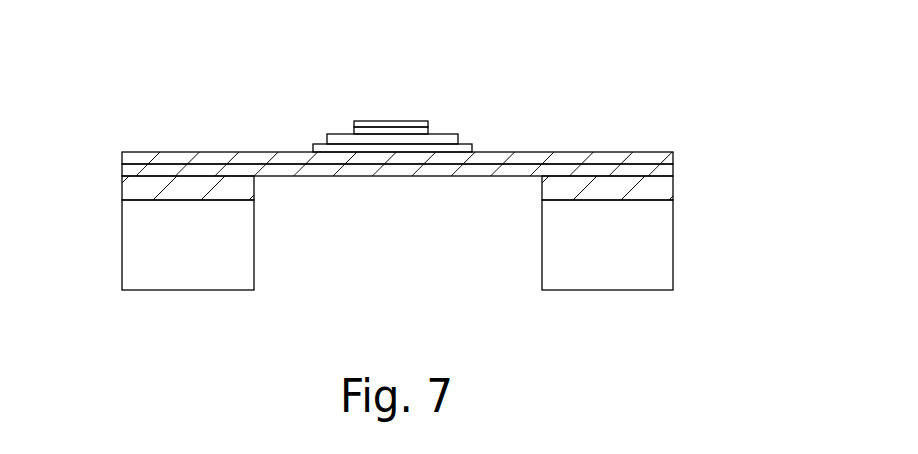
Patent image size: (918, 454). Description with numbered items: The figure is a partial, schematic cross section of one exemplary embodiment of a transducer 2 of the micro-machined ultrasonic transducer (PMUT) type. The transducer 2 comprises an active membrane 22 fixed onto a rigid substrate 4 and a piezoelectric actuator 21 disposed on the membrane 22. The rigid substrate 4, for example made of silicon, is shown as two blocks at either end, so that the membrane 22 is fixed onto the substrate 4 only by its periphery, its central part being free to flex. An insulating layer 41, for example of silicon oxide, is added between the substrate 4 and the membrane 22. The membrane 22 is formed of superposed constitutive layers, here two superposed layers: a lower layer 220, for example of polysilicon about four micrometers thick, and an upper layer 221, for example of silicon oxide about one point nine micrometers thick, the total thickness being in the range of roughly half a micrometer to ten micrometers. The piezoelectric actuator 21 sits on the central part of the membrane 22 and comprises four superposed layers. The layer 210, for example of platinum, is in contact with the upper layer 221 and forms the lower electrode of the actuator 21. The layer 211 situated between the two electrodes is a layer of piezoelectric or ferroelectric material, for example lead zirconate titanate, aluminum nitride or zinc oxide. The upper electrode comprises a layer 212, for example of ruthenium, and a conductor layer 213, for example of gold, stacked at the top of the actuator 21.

The transducer 2 is at (177, 113).
The piezoelectric actuator 21 is at (312, 147).
The lower electrode layer 210 is at (473, 147).
The piezoelectric layer 211 is at (457, 137).
The upper electrode layer 212 is at (421, 122).
The conductor layer 213 is at (365, 120).
The active membrane 22 is at (764, 128).
The upper layer 221 is at (675, 158).
The lower layer 220 is at (675, 170).
The insulating layer 41 is at (147, 182).
The rigid substrate 4 is at (130, 255).